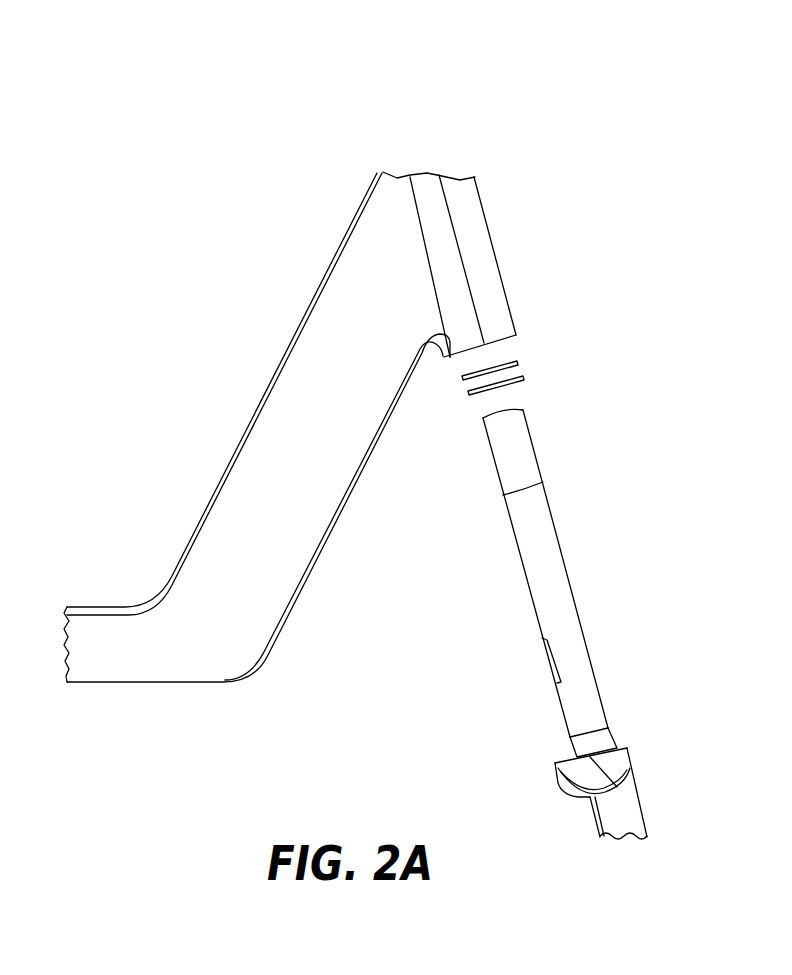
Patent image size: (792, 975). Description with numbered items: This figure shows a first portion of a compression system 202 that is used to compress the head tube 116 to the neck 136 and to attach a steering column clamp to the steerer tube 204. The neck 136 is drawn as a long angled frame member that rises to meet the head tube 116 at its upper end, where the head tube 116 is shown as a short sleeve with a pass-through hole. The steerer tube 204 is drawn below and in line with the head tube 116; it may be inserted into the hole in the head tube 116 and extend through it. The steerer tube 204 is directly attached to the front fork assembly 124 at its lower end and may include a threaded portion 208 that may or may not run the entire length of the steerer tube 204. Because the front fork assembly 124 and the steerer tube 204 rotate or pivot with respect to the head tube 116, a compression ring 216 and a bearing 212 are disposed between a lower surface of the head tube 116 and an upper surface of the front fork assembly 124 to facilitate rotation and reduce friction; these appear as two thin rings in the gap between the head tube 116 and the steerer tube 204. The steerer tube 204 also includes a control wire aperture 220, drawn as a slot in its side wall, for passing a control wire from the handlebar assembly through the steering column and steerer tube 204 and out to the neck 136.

The compression system 202 is at (667, 122).
The neck 136 is at (310, 340).
The head tube 116 is at (507, 312).
The bearing 212 is at (518, 360).
The compression ring 216 is at (468, 392).
The steerer tube 204 is at (533, 467).
The control wire aperture 220 is at (535, 663).
The threaded portion 208 is at (608, 733).
The front fork assembly 124 is at (638, 817).